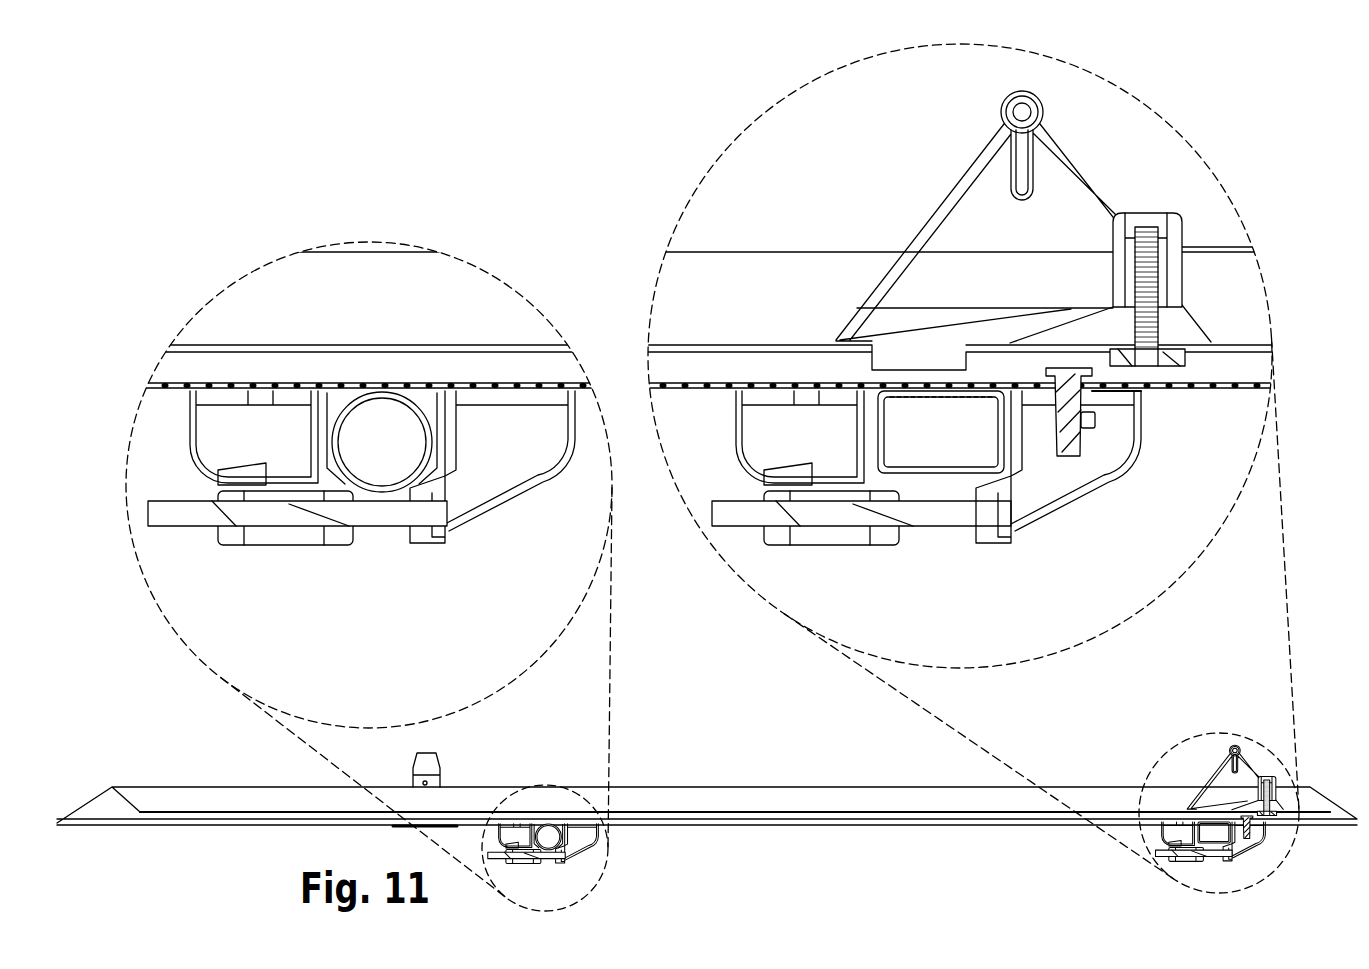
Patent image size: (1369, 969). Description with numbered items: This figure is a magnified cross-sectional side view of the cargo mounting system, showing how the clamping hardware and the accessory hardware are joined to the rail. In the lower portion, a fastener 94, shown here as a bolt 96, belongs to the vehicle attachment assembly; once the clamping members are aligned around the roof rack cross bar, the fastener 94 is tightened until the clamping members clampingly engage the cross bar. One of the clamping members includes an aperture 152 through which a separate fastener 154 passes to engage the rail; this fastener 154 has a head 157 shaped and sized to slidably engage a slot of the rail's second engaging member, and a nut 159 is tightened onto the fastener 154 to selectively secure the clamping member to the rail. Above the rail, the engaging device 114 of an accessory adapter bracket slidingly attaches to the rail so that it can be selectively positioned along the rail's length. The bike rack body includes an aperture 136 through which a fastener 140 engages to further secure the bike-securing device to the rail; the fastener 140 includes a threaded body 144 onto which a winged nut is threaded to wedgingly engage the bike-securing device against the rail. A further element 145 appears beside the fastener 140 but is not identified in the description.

The fastener 94 is at (834, 566).
The bolt 96 is at (738, 516).
The engaging device 114 is at (900, 357).
The aperture 136 is at (1134, 330).
The fastener 140 is at (1155, 254).
The threaded body 144 is at (1147, 253).
The nut 145 is at (1170, 366).
The aperture 152 is at (1058, 386).
The fastener 154 is at (1076, 447).
The head 157 is at (1144, 385).
The nut 159 is at (1099, 417).